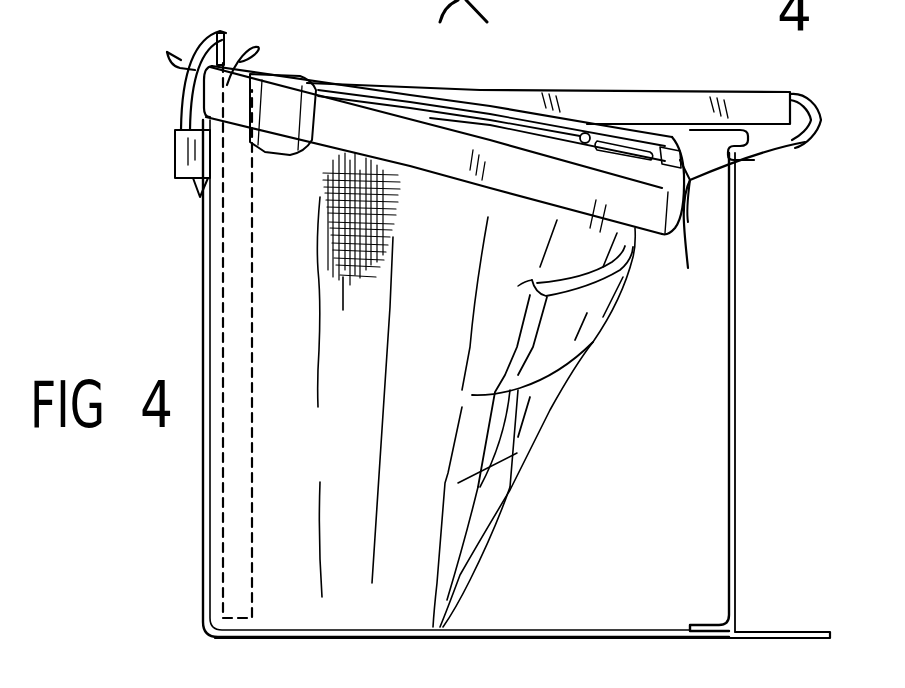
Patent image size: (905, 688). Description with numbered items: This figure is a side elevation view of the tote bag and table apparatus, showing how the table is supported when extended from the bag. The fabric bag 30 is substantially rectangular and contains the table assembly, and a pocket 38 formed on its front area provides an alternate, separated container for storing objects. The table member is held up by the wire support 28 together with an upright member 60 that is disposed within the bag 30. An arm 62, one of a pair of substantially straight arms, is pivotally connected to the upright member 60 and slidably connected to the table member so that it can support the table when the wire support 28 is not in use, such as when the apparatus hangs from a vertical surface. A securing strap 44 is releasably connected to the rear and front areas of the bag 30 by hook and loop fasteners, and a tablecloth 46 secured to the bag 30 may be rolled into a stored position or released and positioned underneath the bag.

The wire support 28 is at (735, 465).
The fabric bag 30 is at (402, 528).
The pocket 38 is at (593, 317).
The securing strap 44 is at (775, 152).
The tablecloth 46 is at (785, 632).
The upright member 60 is at (232, 535).
The arm 62 is at (685, 235).